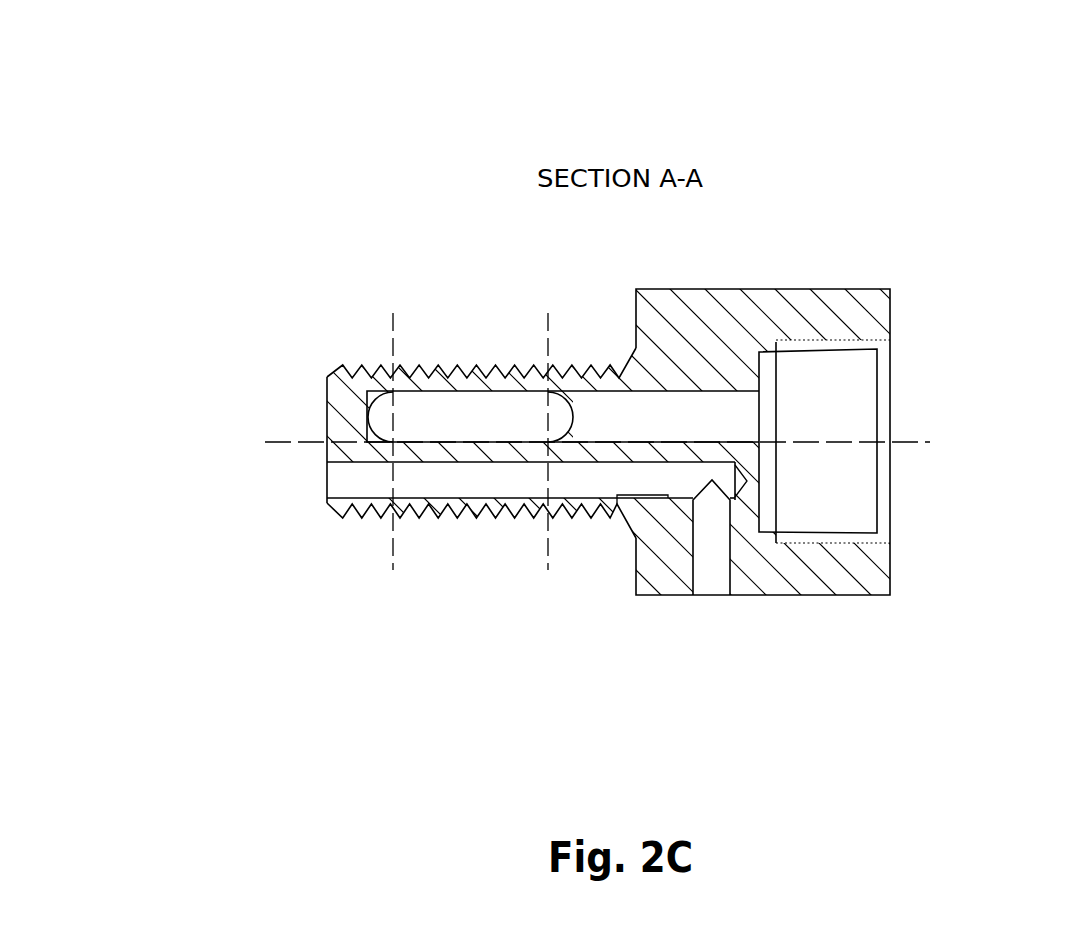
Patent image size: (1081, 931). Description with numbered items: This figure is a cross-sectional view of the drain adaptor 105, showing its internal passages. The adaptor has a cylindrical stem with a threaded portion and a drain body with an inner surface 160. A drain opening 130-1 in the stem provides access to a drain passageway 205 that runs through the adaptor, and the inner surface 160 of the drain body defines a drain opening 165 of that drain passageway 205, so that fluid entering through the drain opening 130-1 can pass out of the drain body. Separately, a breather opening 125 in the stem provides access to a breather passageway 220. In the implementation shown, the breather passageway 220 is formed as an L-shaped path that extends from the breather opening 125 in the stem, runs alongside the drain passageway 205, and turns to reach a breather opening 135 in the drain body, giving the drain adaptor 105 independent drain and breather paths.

The drain adaptor 105 is at (160, 52).
The breather opening 125 is at (327, 484).
The drain opening 130-1 is at (477, 405).
The drain passageway 205 is at (637, 410).
The drain opening 165 is at (778, 412).
The inner surface 160 is at (778, 500).
The breather passageway 220 is at (373, 483).
The breather opening 135 is at (712, 597).